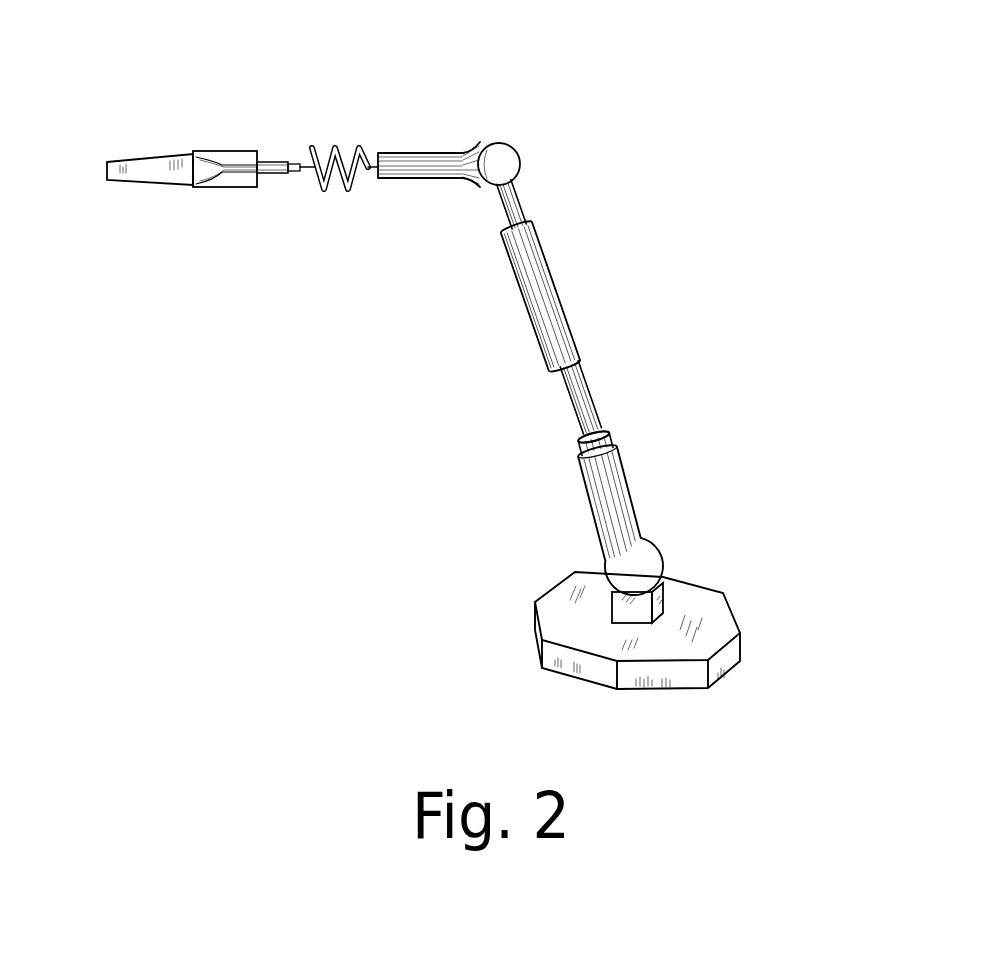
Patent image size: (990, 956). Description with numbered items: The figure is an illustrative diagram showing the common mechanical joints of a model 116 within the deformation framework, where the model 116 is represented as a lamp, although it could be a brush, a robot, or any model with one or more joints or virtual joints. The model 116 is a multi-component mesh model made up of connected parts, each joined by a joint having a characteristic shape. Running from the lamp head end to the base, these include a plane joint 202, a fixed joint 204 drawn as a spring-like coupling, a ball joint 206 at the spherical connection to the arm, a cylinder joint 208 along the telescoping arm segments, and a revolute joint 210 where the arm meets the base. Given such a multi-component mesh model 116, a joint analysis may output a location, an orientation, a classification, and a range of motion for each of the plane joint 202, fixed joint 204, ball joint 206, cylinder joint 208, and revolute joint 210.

The model 116 is at (860, 70).
The plane joint 202 is at (149, 162).
The fixed joint 204 is at (340, 149).
The ball joint 206 is at (495, 163).
The cylinder joint 208 is at (588, 390).
The revolute joint 210 is at (652, 530).